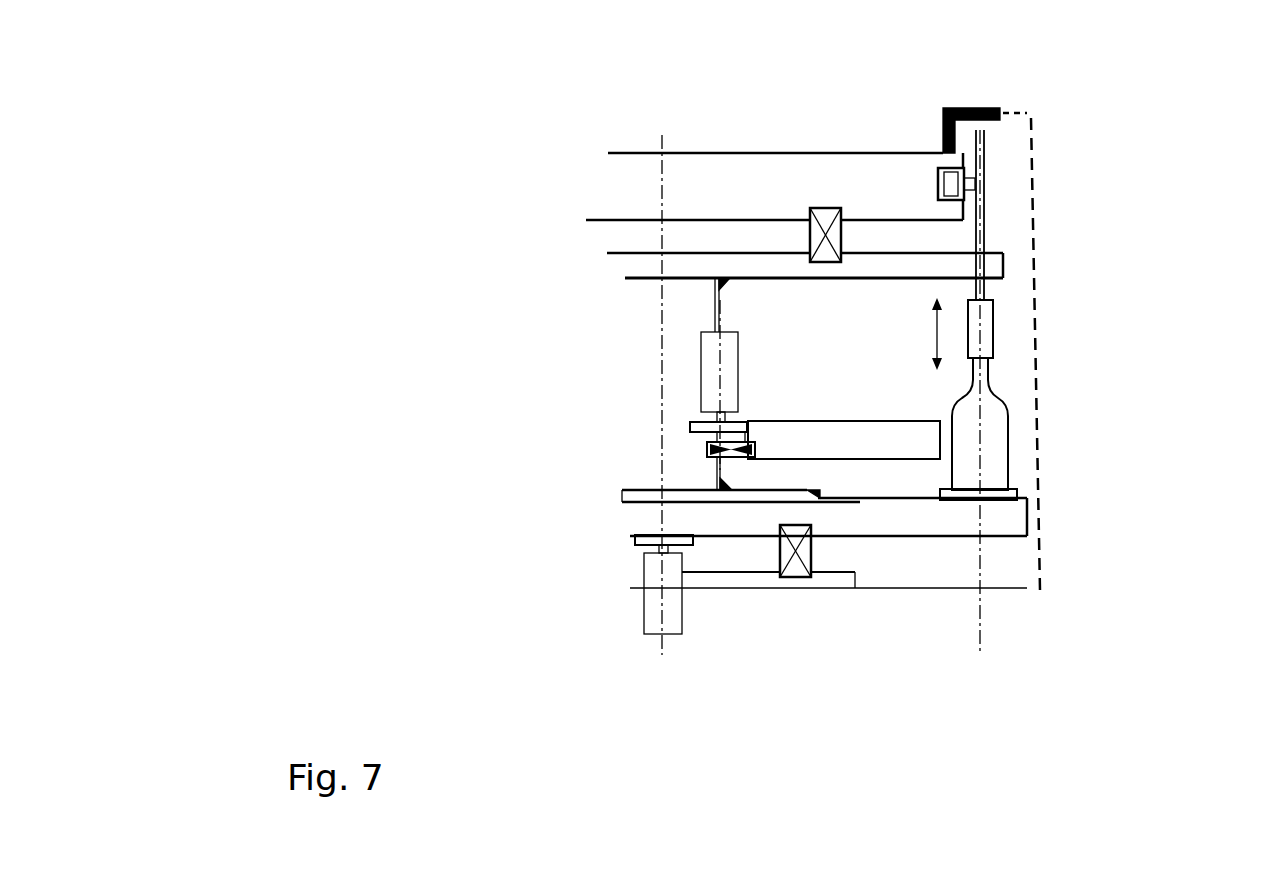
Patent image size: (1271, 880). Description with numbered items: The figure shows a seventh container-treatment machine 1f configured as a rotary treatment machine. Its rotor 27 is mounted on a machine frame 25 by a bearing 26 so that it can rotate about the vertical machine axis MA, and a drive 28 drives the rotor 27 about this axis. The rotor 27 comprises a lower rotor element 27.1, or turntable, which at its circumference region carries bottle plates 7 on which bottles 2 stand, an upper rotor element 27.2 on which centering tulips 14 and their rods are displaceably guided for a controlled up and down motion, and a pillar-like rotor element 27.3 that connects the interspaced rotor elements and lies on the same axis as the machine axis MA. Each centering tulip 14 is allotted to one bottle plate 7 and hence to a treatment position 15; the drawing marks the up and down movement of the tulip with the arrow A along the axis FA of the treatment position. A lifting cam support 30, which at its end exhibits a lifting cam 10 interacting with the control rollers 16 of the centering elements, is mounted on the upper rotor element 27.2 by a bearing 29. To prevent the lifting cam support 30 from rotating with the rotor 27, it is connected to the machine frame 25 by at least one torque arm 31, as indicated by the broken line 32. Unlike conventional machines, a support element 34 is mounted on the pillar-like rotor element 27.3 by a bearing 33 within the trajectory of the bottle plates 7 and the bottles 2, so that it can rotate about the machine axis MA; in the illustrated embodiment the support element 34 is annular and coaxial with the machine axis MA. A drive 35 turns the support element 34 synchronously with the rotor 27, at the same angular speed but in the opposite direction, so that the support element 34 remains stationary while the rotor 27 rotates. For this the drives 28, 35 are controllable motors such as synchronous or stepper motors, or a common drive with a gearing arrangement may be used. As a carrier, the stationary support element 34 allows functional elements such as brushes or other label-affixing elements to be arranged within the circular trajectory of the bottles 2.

The container-treatment machine 1f is at (470, 227).
The machine axis MA is at (662, 138).
The filling element axis FA is at (980, 137).
The lifting direction A is at (912, 334).
The bottle 2 is at (1000, 436).
The bottle plate 7 is at (1015, 493).
The lifting cam 10 is at (945, 168).
The centering tulip 14 is at (1022, 304).
The treatment position 15 is at (1068, 329).
The control roller 16 is at (982, 173).
The machine frame 25 is at (775, 639).
The bearing 26 is at (798, 548).
The rotor 27 is at (614, 384).
The lower rotor element 27.1 is at (897, 512).
The upper rotor element 27.2 is at (746, 262).
The pillar-like rotor element 27.3 is at (660, 334).
The drive 28 is at (645, 607).
The bearing 29 is at (822, 208).
The lifting cam support 30 is at (867, 185).
The torque arm 31 is at (985, 104).
The broken line 32 is at (1028, 402).
The bearing 33 is at (710, 447).
The support element 34 is at (870, 438).
The drive 35 is at (710, 375).